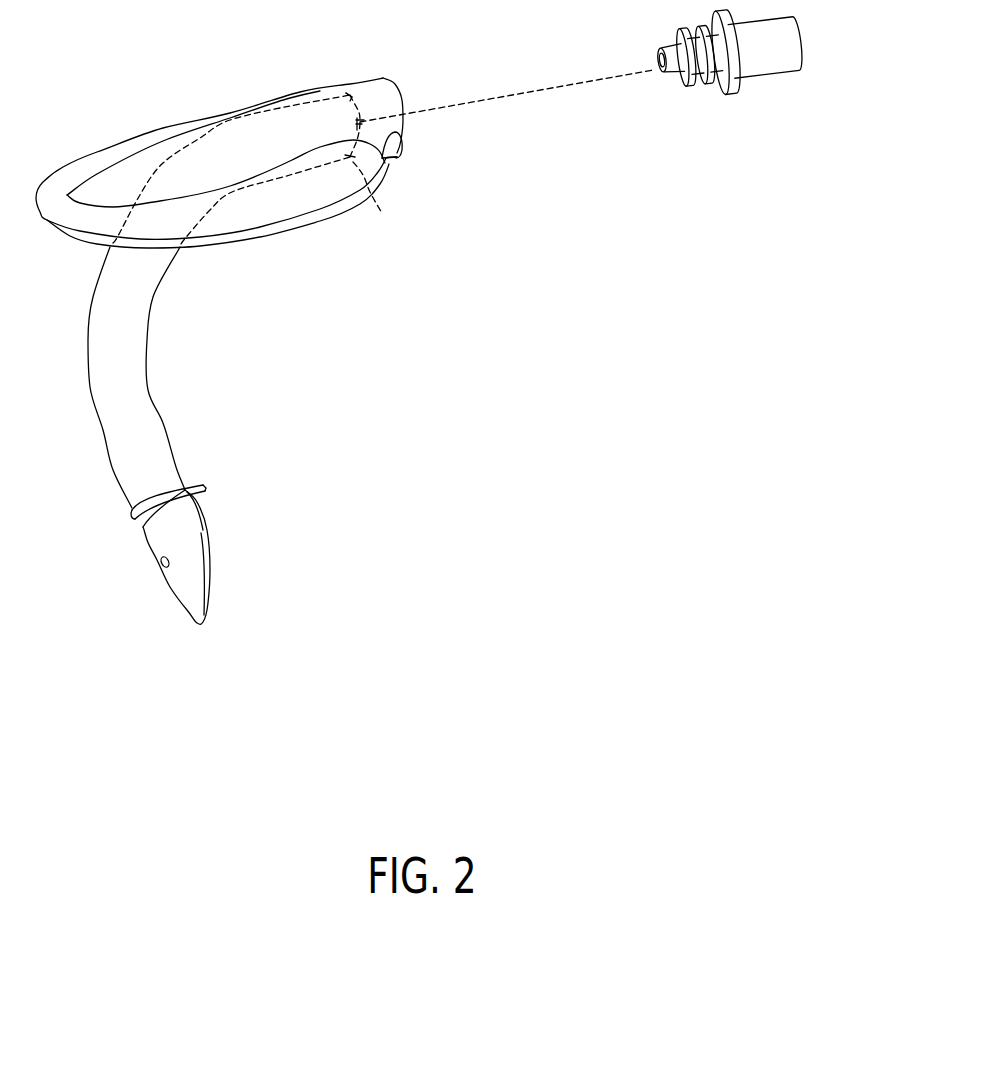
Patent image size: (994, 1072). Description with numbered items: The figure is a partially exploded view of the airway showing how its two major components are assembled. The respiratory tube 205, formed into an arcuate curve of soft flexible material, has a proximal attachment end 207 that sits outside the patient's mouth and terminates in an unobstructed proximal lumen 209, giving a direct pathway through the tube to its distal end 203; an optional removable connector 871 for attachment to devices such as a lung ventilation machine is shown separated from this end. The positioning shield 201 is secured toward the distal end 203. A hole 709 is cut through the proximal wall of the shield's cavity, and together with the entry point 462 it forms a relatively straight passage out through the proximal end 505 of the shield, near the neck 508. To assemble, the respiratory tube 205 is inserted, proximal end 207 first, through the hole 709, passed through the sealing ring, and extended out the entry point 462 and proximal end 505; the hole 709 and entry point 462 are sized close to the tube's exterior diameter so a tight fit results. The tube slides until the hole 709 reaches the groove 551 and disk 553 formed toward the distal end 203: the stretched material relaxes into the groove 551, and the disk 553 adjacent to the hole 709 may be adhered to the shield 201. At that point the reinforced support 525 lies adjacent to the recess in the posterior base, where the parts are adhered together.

The positioning shield 201 is at (290, 228).
The distal end 203 is at (183, 491).
The respiratory tube 205 is at (148, 327).
The proximal end 207 is at (350, 95).
The proximal lumen 209 is at (360, 122).
The entry point 462 is at (360, 122).
The proximal end 505 is at (399, 157).
The neck 508 is at (389, 160).
The hole 709 is at (375, 205).
The reinforced support 525 is at (187, 592).
The groove 551 is at (130, 520).
The disk 553 is at (207, 490).
The connector 871 is at (773, 74).